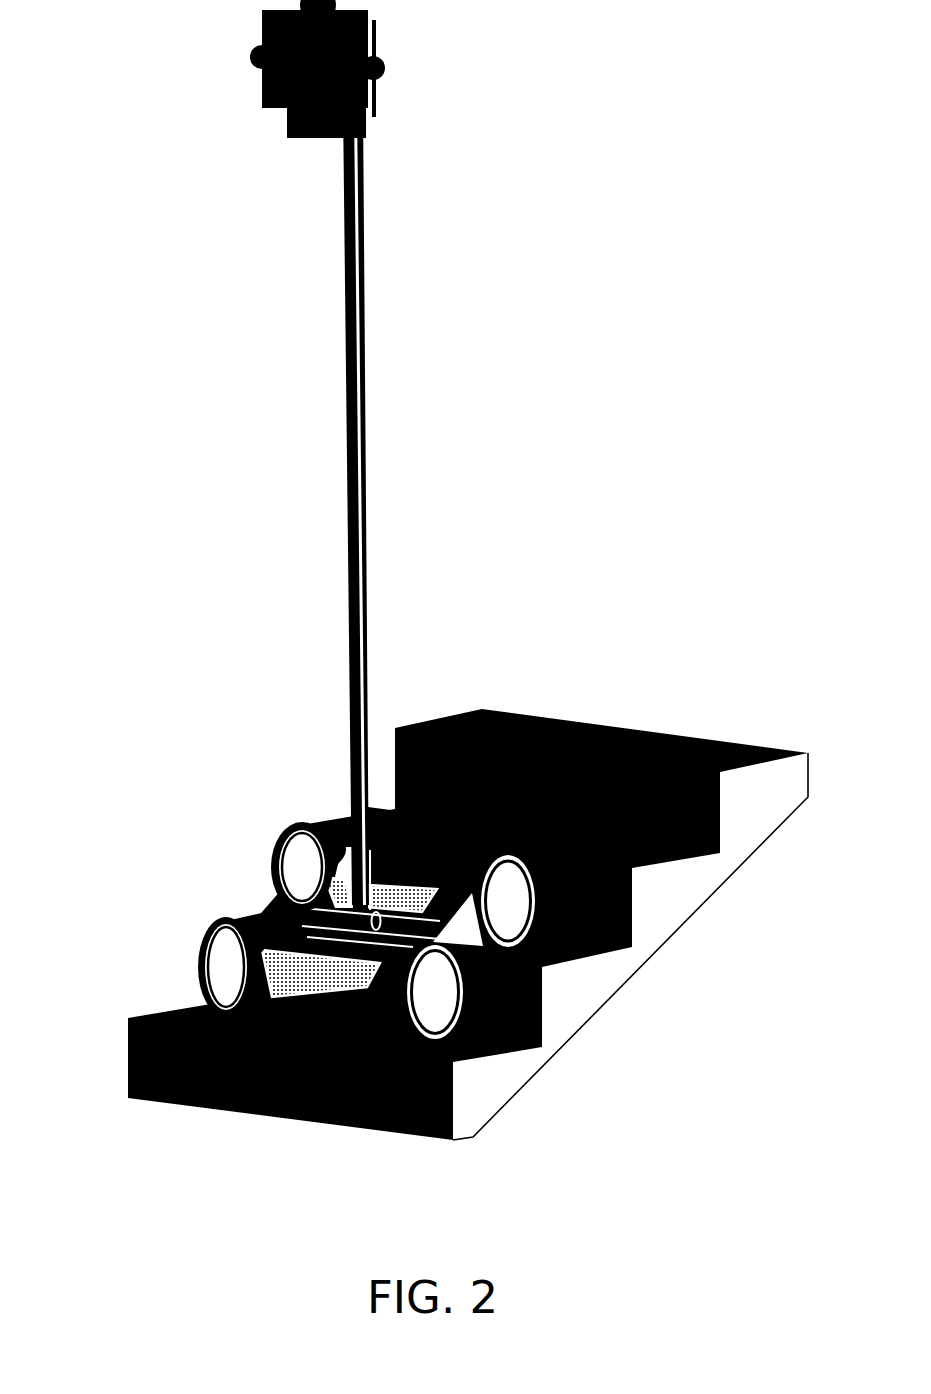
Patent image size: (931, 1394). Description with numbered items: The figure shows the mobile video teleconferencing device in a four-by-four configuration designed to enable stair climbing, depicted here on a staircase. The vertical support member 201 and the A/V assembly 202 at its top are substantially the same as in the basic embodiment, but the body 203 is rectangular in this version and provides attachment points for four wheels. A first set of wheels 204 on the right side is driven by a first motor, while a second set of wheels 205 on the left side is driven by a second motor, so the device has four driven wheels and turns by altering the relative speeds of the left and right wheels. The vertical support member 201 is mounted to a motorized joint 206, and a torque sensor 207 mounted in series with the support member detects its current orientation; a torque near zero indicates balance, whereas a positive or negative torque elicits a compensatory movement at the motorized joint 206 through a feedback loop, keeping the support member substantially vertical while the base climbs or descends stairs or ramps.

The vertical support member 201 is at (368, 443).
The A/V assembly 202 is at (262, 78).
The body 203 is at (308, 955).
The first set of wheels 204 is at (462, 1024).
The second set of wheels 205 is at (273, 843).
The motorized joint 206 is at (337, 843).
The torque sensor 207 is at (370, 807).